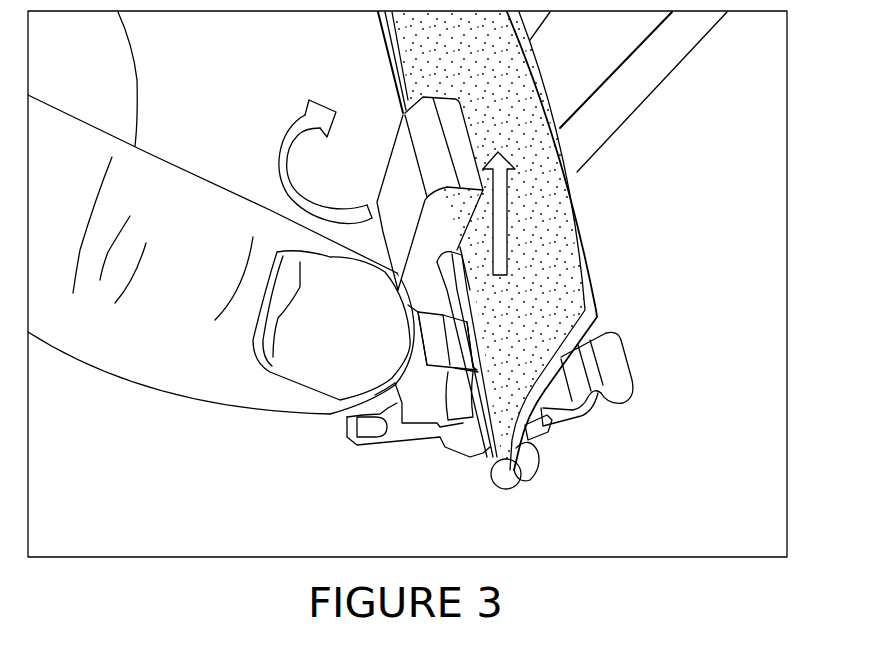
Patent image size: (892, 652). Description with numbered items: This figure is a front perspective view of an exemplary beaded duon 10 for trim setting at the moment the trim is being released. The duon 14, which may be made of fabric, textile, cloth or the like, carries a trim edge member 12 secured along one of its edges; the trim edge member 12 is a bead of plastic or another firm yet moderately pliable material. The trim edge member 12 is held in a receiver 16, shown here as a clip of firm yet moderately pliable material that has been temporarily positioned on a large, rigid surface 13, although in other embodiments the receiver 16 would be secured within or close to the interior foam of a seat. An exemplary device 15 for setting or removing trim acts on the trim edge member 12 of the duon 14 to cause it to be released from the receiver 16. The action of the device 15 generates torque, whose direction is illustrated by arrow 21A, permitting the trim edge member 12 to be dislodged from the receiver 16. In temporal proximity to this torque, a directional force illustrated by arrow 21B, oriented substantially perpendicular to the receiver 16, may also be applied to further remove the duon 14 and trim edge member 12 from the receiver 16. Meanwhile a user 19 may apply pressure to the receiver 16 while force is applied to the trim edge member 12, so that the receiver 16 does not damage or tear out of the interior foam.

The beaded duon 10 is at (695, 186).
The trim edge member 12 is at (523, 473).
The rigid surface 13 is at (778, 490).
The duon 14 is at (590, 290).
The device 15 is at (640, 90).
The receiver 16 is at (617, 393).
The user 19 is at (160, 172).
The arrow 21A is at (327, 213).
The arrow 21B is at (510, 240).